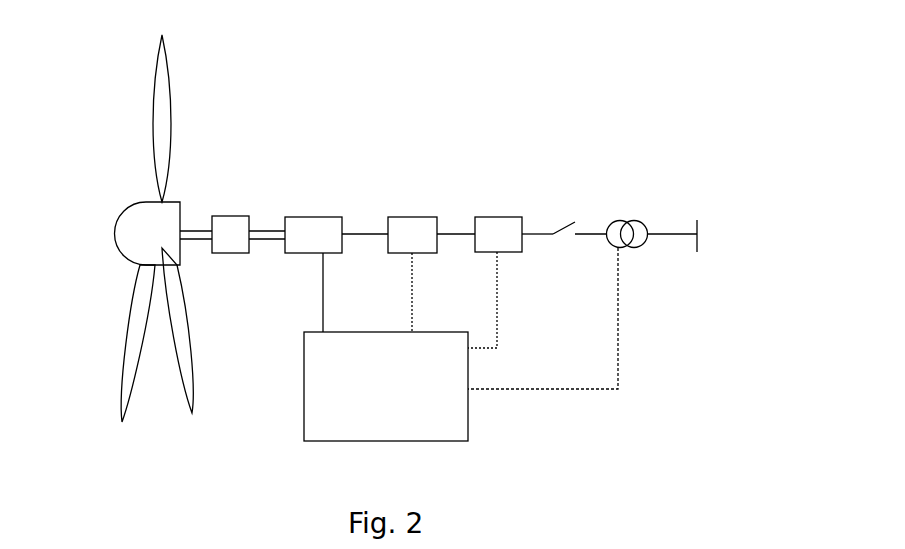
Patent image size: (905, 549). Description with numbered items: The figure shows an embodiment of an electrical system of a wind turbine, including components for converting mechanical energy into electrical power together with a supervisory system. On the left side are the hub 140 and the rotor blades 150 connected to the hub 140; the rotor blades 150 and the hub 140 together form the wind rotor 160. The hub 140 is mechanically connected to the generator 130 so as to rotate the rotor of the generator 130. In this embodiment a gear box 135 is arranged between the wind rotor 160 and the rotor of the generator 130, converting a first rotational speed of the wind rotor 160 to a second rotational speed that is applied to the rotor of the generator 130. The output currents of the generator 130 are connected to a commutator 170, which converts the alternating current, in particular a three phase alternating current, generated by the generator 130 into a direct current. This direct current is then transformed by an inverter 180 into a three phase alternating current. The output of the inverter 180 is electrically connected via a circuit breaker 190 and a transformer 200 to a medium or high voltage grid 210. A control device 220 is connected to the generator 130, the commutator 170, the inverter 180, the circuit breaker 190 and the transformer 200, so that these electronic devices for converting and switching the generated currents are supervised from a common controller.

The generator 130 is at (300, 225).
The gear box 135 is at (242, 230).
The hub 140 is at (164, 218).
The rotor blades 150 is at (158, 118).
The wind rotor 160 is at (110, 267).
The commutator 170 is at (407, 223).
The inverter 180 is at (497, 227).
The circuit breaker 190 is at (578, 208).
The transformer 200 is at (625, 250).
The grid 210 is at (700, 230).
The control device 220 is at (390, 392).